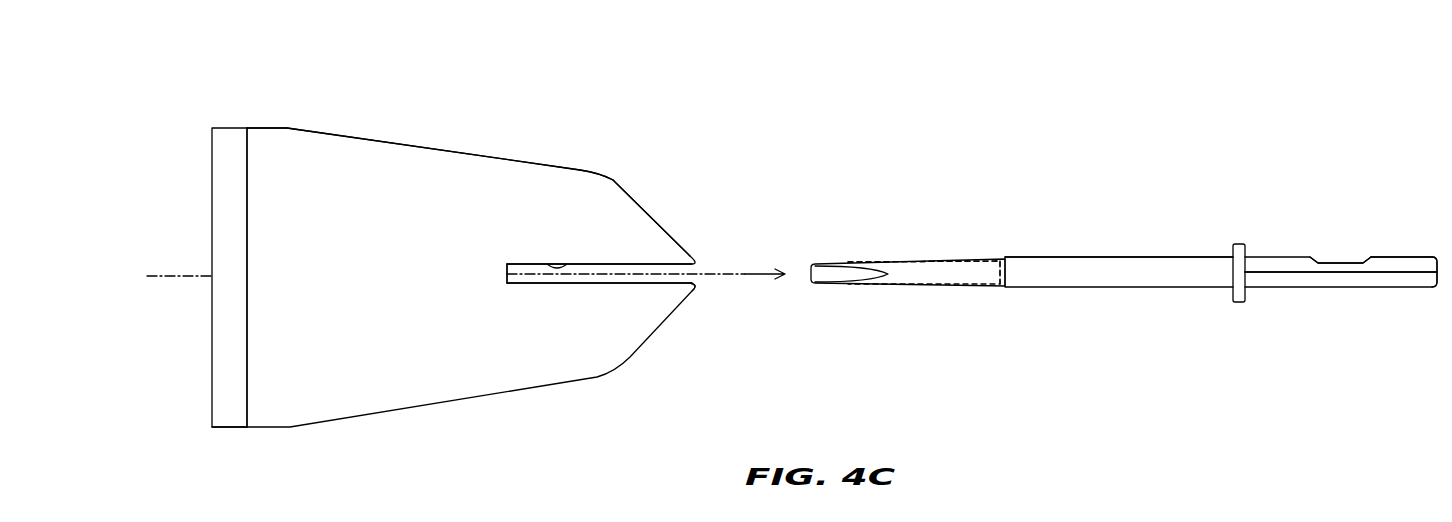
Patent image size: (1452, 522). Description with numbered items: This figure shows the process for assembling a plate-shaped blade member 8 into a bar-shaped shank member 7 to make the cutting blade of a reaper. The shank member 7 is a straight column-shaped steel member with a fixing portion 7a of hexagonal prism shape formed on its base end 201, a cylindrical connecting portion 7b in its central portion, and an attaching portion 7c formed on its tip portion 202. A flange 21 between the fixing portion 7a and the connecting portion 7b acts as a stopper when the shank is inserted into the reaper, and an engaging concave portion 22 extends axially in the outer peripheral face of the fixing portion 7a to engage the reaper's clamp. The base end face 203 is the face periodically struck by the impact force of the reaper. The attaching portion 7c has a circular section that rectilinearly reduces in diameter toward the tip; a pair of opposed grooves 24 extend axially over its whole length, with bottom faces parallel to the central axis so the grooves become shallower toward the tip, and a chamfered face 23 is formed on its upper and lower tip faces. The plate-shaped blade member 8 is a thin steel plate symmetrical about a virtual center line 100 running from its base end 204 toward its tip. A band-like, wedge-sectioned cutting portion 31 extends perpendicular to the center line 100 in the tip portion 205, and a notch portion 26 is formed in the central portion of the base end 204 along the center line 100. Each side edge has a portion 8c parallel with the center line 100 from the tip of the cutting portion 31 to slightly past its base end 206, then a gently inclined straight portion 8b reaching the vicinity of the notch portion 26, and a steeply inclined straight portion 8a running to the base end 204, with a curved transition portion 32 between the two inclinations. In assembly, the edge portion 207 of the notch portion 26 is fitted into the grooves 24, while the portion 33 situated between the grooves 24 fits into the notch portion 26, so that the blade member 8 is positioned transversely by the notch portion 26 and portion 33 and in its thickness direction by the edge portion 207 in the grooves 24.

The shank member 7 is at (1170, 249).
The fixing portion 7a is at (1388, 257).
The connecting portion 7b is at (1075, 258).
The attaching portion 7c is at (947, 260).
The plate-shaped blade member 8 is at (520, 140).
The steeply inclined side edge portion 8a is at (665, 220).
The gently inclined side edge portion 8b is at (390, 143).
The parallel side edge portion 8c is at (265, 128).
The flange 21 is at (1240, 244).
The engaging concave portion 22 is at (1330, 263).
The chamfered face 23 is at (836, 270).
The grooves 24 is at (978, 255).
The notch portion 26 is at (568, 264).
The cutting portion 31 is at (229, 137).
The curved transition portion 32 is at (613, 180).
The portion situated between the grooves 33 is at (913, 270).
The virtual center line 100 is at (172, 258).
The base end 201 is at (1298, 203).
The tip portion 202 is at (934, 202).
The base end face 203 is at (1438, 271).
The base end 204 is at (727, 292).
The tip portion 205 is at (257, 448).
The base end of the cutting portion 206 is at (248, 130).
The edge portion 207 is at (672, 264).